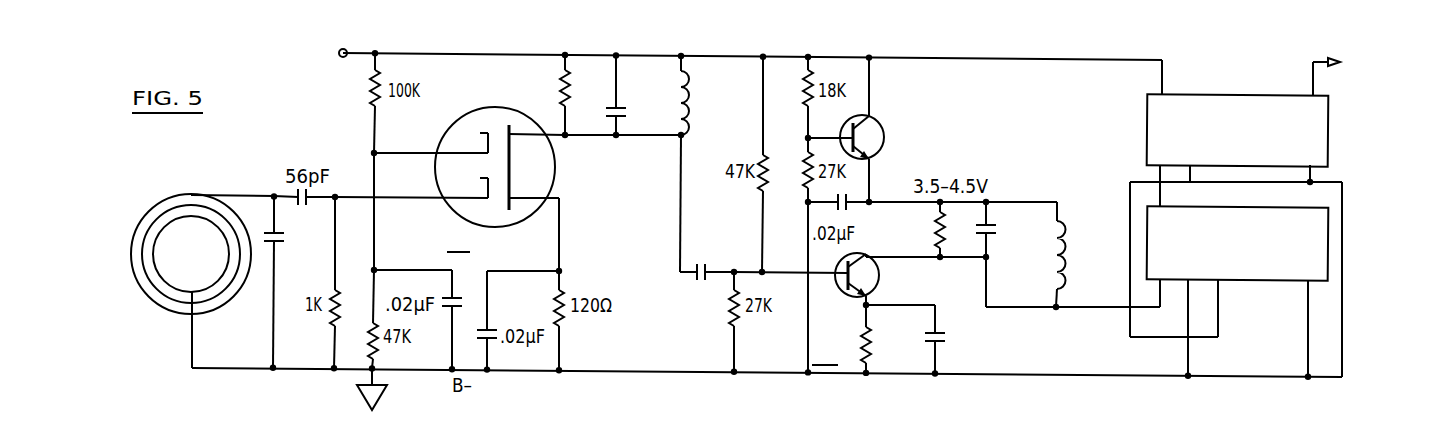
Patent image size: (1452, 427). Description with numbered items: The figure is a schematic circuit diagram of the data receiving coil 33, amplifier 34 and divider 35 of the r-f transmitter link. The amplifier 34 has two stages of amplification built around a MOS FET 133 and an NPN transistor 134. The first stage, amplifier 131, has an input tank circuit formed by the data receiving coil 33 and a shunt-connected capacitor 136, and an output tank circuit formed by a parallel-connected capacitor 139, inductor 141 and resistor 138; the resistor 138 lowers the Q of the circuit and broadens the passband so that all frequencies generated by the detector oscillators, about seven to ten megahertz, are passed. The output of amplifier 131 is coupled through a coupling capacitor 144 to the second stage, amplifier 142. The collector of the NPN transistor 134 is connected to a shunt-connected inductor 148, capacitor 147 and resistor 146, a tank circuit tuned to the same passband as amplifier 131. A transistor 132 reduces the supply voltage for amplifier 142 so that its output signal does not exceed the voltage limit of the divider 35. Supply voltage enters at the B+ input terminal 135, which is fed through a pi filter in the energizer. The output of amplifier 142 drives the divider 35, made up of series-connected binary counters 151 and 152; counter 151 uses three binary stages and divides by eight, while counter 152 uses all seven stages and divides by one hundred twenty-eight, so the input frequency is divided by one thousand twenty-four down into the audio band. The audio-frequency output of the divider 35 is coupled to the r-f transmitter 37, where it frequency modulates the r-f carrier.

The data receiving coil 33 is at (166, 304).
The amplifier 34 is at (783, 50).
The divider 35 is at (1115, 137).
The r-f transmitter 37 is at (1396, 99).
The amplifier 131 is at (450, 165).
The transistor 132 is at (871, 118).
The MOS FET 133 is at (447, 203).
The NPN transistor 134 is at (843, 296).
The B+ input terminal 135 is at (346, 49).
The capacitor 136 is at (281, 245).
The resistor 138 is at (558, 86).
The capacitor 139 is at (610, 120).
The inductor 141 is at (689, 138).
The amplifier 142 is at (903, 338).
The coupling capacitor 144 is at (695, 280).
The resistor 146 is at (946, 246).
The capacitor 147 is at (998, 222).
The inductor 148 is at (1050, 275).
The binary counter 151 is at (1286, 282).
The binary counter 152 is at (1146, 104).